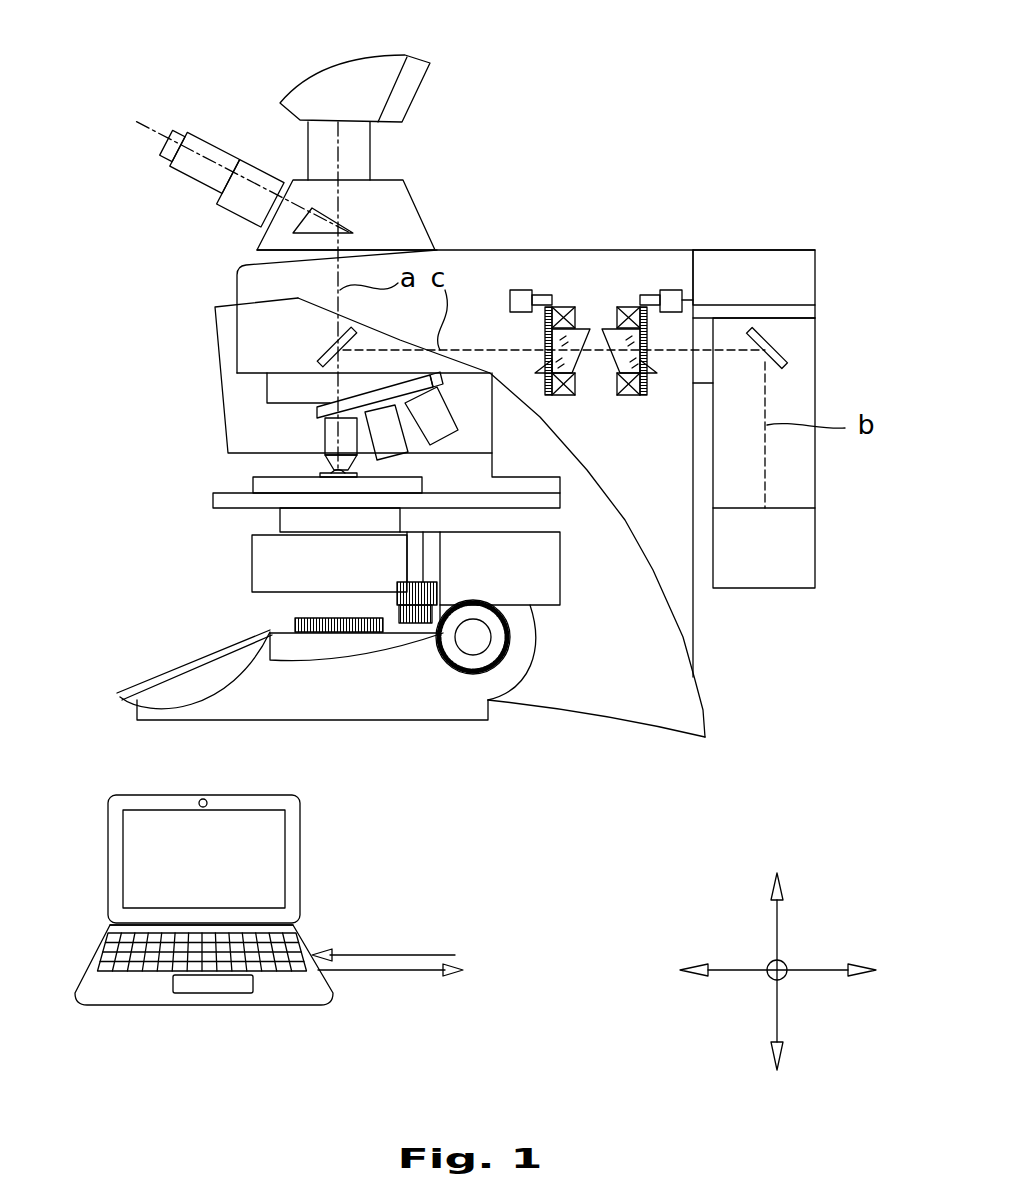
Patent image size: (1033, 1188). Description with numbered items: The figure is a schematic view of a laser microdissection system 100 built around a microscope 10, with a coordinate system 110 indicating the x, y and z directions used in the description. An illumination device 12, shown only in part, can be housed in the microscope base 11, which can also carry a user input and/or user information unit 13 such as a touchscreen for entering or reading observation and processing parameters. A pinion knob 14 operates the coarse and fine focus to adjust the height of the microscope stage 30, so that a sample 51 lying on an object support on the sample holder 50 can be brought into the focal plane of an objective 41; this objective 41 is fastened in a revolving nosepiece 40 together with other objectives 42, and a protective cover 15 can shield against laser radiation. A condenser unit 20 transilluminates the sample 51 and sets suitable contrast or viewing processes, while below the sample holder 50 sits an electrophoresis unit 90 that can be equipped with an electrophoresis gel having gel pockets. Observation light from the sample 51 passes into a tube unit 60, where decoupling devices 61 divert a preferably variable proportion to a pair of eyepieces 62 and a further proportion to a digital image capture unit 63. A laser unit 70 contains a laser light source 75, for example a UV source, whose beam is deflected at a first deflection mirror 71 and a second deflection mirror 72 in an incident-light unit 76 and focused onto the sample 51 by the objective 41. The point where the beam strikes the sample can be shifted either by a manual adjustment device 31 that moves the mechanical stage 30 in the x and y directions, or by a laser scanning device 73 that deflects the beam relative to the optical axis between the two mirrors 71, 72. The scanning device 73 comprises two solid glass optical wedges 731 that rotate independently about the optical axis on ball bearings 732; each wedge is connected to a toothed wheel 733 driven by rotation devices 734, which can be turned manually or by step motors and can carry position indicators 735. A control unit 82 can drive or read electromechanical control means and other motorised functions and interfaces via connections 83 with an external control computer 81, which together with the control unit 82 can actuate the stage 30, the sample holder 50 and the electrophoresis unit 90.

The laser microdissection system 100 is at (552, 157).
The microscope 10 is at (692, 710).
The microscope base 11 is at (370, 697).
The illumination device 12 is at (293, 625).
The user input unit 13 is at (150, 688).
The pinion knob 14 is at (517, 637).
The protective cover 15 is at (227, 383).
The condenser unit 20 is at (277, 522).
The microscope stage 30 is at (215, 502).
The manual adjustment device 31 is at (415, 550).
The revolving nosepiece 40 is at (322, 410).
The objective 41 is at (330, 443).
The other objectives 42 is at (393, 422).
The sample holder 50 is at (232, 477).
The sample 51 is at (263, 490).
The tube unit 60 is at (260, 247).
The decoupling devices 61 is at (338, 222).
The pair of eyepieces 62 is at (202, 137).
The digital image capture unit 63 is at (410, 92).
The laser unit 70 is at (808, 593).
The first deflection mirror 71 is at (786, 352).
The second deflection mirror 72 is at (343, 353).
The laser scanning device 73 is at (581, 329).
The optical wedges 731 is at (607, 367).
The ball bearings 732 is at (610, 298).
The toothed wheel 733 is at (543, 336).
The rotation devices 734 is at (538, 292).
The position indicators 735 is at (694, 298).
The laser light source 75 is at (745, 560).
The incident-light unit 76 is at (836, 290).
The external control computer 81 is at (352, 890).
The control unit 82 is at (788, 252).
The connections 83 is at (407, 958).
The electrophoresis unit 90 is at (255, 557).
The coordinate system 110 is at (677, 905).